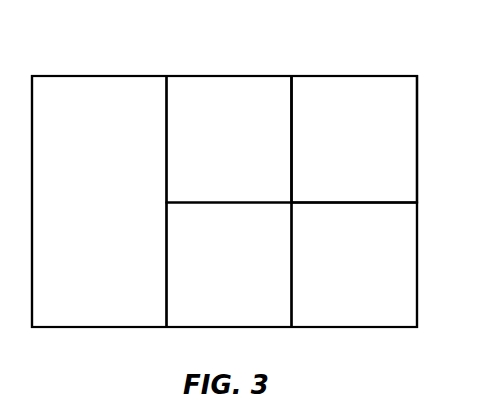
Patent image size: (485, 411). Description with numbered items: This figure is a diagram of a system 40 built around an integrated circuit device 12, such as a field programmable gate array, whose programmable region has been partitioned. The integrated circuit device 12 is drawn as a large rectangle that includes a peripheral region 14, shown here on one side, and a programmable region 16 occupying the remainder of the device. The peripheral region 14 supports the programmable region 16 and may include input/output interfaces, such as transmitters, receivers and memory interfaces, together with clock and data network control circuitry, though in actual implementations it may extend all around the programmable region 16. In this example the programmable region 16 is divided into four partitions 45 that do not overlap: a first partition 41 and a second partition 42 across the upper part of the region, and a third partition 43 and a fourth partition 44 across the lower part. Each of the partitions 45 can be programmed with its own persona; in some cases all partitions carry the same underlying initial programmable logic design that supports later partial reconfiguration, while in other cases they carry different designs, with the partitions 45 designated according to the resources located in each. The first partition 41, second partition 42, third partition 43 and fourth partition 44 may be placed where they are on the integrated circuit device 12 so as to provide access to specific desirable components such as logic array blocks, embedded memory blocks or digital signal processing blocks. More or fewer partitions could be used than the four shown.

The thermal management assembly 40 is at (388, 42).
The integrated circuit device 12 is at (418, 139).
The peripheral region 14 is at (101, 80).
The programmable region 16 is at (407, 320).
The first partition 41 is at (266, 80).
The second partition 42 is at (356, 80).
The third partition 43 is at (213, 321).
The fourth partition 44 is at (318, 321).
The partitions 45 is at (190, 80).